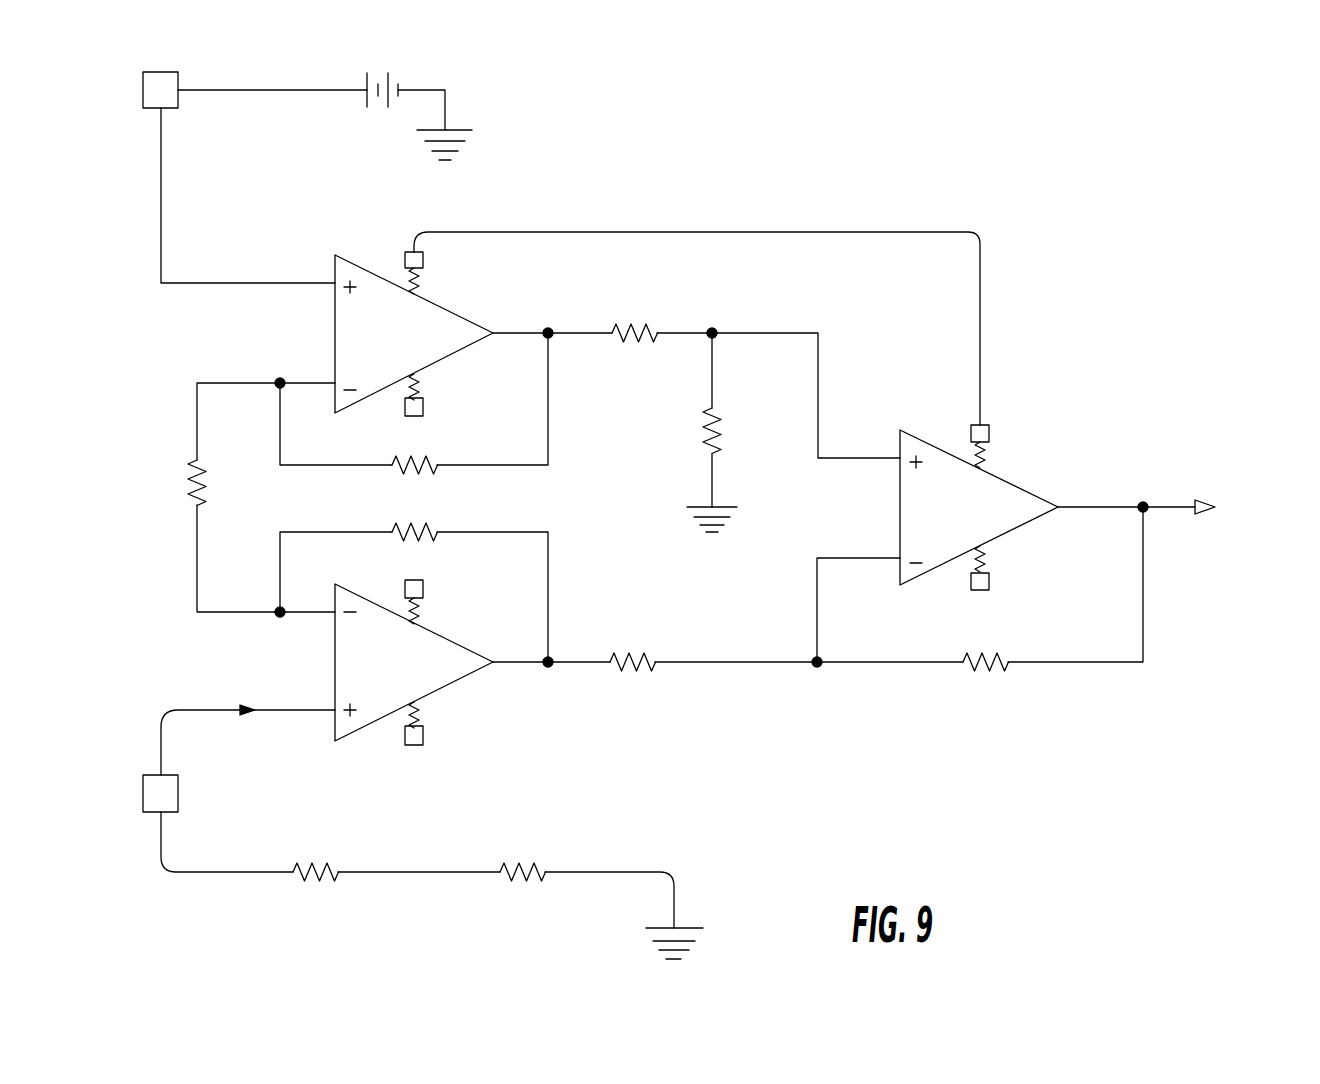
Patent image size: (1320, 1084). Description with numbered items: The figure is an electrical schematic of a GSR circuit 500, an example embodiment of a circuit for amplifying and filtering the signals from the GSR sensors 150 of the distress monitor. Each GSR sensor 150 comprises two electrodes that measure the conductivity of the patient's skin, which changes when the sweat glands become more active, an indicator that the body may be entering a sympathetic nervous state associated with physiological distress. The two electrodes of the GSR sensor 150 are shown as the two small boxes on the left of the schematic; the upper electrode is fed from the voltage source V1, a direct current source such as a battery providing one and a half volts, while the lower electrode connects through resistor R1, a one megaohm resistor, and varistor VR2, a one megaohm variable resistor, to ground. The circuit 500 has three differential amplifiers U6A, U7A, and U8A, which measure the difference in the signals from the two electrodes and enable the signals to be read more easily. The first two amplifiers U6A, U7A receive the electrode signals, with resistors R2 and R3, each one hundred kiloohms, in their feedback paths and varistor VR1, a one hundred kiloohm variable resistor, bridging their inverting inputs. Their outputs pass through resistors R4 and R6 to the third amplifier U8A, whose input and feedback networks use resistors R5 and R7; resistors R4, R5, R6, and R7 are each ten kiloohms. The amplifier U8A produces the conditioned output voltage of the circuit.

The GSR sensor 150 is at (178, 79).
The GSR circuit 500 is at (970, 96).
The voltage source V1 is at (382, 73).
The resistor R1 is at (316, 852).
The resistor R2 is at (420, 476).
The resistor R3 is at (408, 518).
The resistor R4 is at (635, 314).
The resistor R5 is at (729, 431).
The resistor R6 is at (633, 644).
The resistor R7 is at (986, 644).
The varistor VR1 is at (178, 483).
The varistor VR2 is at (523, 852).
The differential amplifier U6A is at (414, 334).
The differential amplifier U7A is at (414, 662).
The differential amplifier U8A is at (979, 507).